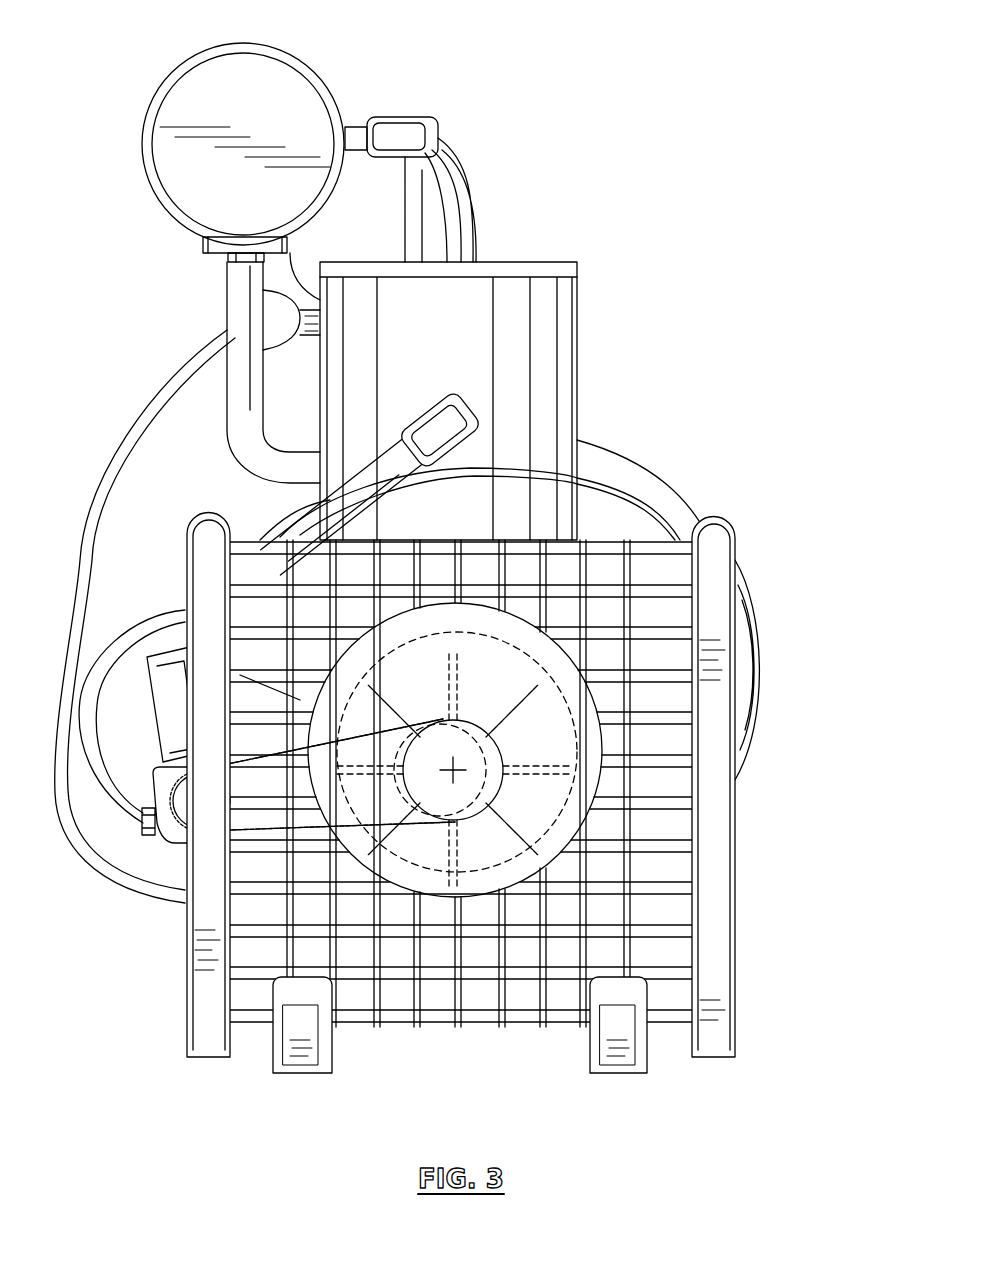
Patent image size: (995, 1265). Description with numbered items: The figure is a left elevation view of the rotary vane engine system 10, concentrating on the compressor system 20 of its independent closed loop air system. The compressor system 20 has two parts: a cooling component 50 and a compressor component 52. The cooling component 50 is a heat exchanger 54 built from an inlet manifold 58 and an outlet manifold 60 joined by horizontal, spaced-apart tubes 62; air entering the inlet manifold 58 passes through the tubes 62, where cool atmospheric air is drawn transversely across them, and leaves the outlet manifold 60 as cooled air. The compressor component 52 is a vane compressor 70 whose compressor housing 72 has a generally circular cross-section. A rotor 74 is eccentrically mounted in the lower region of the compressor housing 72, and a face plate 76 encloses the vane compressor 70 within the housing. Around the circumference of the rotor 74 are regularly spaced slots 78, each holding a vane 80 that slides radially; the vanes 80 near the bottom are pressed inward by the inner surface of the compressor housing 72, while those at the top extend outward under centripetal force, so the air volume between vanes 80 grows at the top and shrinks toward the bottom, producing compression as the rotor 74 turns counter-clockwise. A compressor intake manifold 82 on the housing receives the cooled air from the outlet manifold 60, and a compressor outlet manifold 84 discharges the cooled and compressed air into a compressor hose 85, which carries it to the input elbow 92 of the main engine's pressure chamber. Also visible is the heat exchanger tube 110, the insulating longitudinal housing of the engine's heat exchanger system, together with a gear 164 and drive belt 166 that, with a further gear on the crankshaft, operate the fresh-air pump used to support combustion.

The misting fan system 10 is at (660, 172).
The compressor system 20 is at (460, 811).
The cooling component 50 is at (539, 589).
The compressor component 52 is at (493, 811).
The heat exchanger 54 is at (650, 545).
The inlet manifold 58 is at (200, 1030).
The outlet manifold 60 is at (762, 1012).
The horizontal tubes 62 is at (660, 500).
The vane compressor 70 is at (472, 895).
The compressor housing 72 is at (640, 545).
The rotor 74 is at (546, 714).
The face plate 76 is at (240, 675).
The slots 78 is at (468, 610).
The vanes 80 is at (446, 568).
The compressor intake manifold 82 is at (612, 695).
The compressor outlet manifold 84 is at (275, 733).
The compressor hose 85 is at (312, 527).
The input elbow 92 is at (432, 428).
The heat exchanger tube 110 is at (188, 92).
The gear 164 is at (180, 837).
The drive belt 166 is at (360, 850).